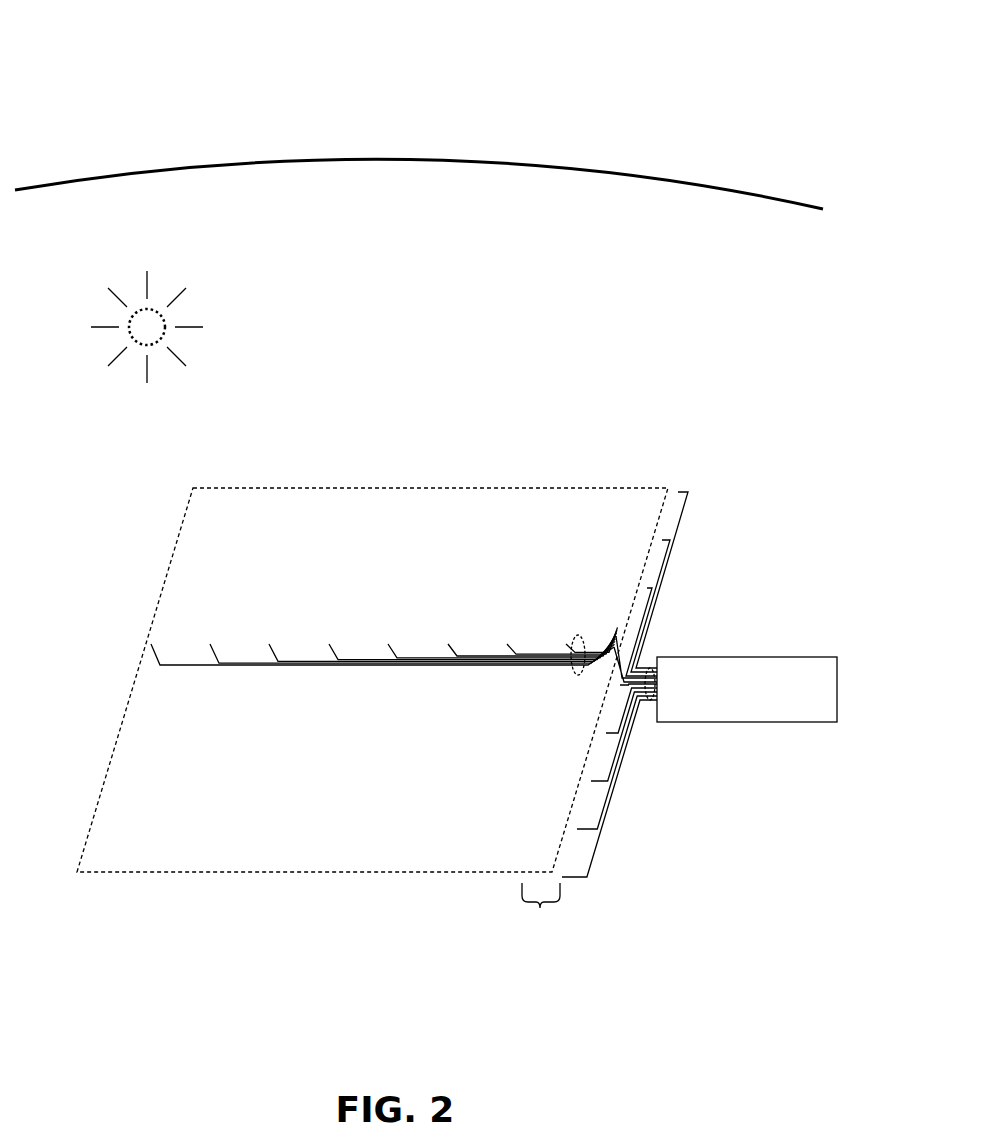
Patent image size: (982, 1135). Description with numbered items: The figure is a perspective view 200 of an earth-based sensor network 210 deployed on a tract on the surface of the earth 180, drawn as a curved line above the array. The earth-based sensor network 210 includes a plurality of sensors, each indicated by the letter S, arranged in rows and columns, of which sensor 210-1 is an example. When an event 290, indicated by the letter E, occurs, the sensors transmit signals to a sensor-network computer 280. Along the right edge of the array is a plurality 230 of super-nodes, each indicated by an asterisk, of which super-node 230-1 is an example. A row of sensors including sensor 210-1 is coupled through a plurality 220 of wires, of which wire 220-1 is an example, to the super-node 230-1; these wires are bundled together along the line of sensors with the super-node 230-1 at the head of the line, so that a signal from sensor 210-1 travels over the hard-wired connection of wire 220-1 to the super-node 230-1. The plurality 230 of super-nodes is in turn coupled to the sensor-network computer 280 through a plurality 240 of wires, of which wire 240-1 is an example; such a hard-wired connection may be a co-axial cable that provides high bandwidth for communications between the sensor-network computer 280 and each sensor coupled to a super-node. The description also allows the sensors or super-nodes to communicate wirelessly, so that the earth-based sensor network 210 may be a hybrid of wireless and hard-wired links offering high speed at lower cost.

The perspective view 200 is at (170, 76).
The surface of the earth 180 is at (634, 162).
The event 290 is at (115, 344).
The earth-based sensor network 210 is at (213, 478).
The sensor 210-1 is at (383, 613).
The plurality of wires 220 is at (580, 621).
The wire 220-1 is at (402, 644).
The plurality of super-nodes 230 is at (604, 709).
The super-node 230-1 is at (612, 613).
The plurality of wires 240 is at (650, 654).
The wire 240-1 is at (633, 624).
The sensor-network computer 280 is at (736, 664).